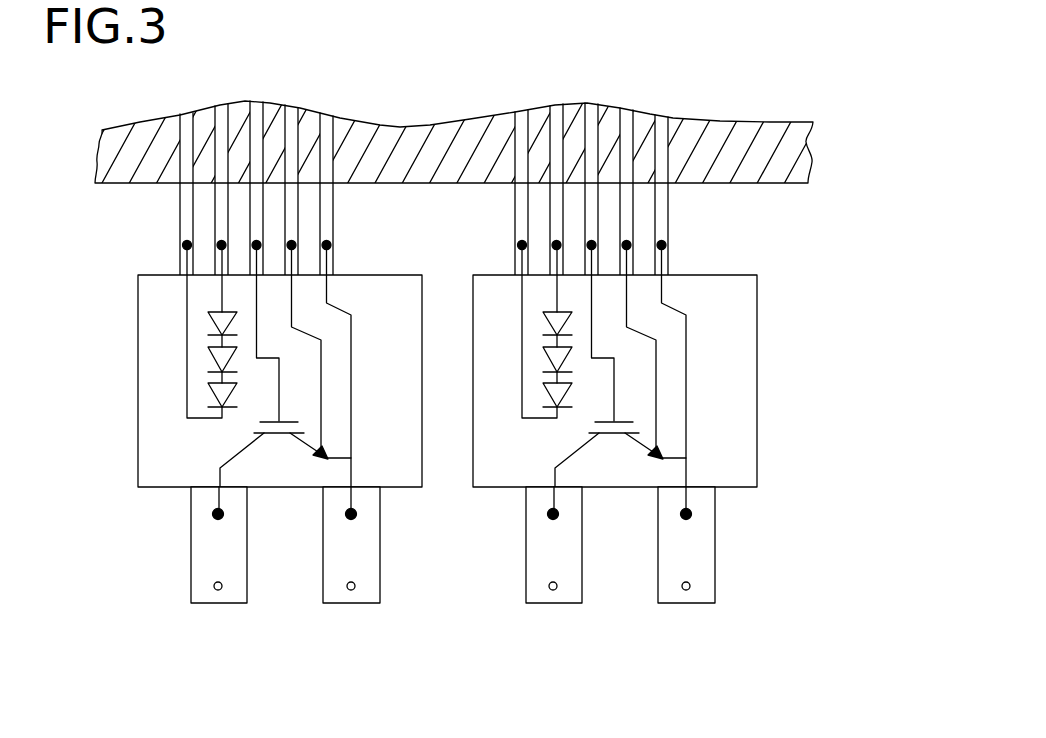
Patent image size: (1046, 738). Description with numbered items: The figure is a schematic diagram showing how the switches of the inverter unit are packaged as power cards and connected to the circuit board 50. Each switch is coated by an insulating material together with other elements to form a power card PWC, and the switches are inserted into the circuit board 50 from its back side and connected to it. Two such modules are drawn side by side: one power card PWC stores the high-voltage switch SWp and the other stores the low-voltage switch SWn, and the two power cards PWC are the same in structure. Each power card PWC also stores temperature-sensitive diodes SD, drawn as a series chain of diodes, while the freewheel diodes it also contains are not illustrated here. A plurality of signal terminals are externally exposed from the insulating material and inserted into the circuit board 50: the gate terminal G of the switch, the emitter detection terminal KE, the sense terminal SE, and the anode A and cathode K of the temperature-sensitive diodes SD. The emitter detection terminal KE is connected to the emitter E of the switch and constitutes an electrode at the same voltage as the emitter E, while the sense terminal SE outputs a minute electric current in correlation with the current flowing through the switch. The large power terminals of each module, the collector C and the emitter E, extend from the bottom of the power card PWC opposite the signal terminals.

The circuit board 50 is at (808, 150).
The power card PWC is at (200, 429).
The temperature-sensitive diodes SD is at (535, 429).
The high-voltage switch SWp is at (316, 449).
The low-voltage switch SWn is at (651, 449).
The collector C is at (570, 592).
The emitter E is at (702, 592).
The cathode K is at (522, 113).
The anode A is at (556, 106).
The gate terminal G is at (592, 103).
The sense terminal SE is at (627, 108).
The emitter detection terminal KE is at (663, 115).